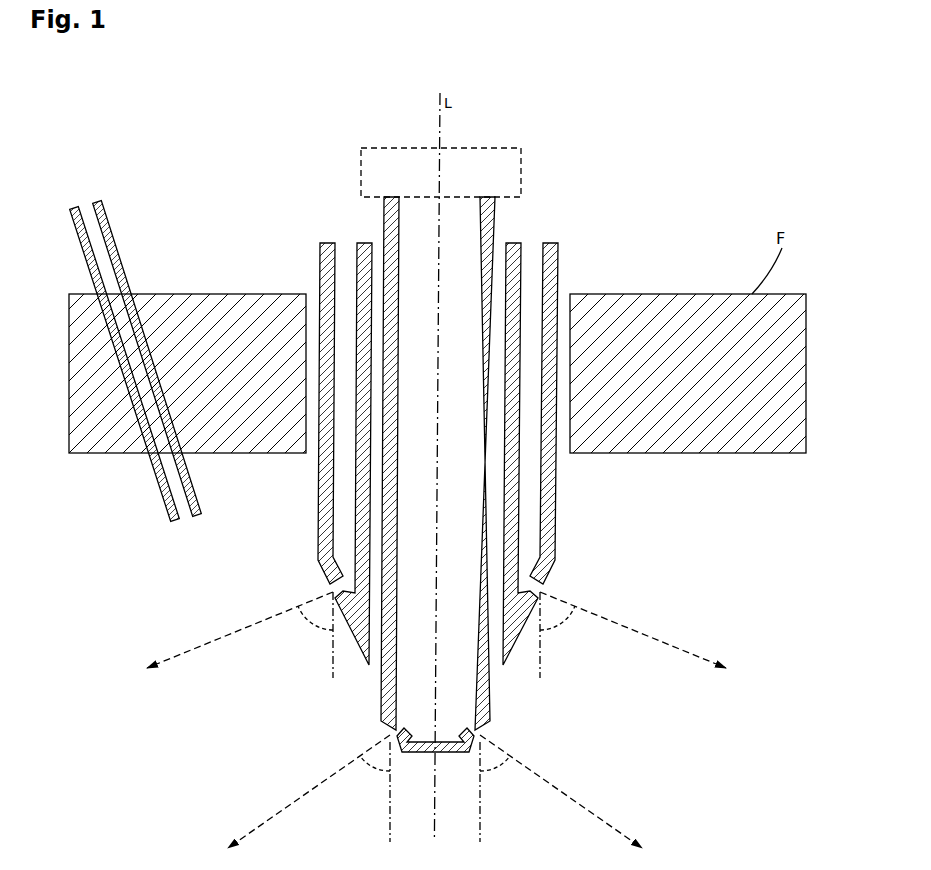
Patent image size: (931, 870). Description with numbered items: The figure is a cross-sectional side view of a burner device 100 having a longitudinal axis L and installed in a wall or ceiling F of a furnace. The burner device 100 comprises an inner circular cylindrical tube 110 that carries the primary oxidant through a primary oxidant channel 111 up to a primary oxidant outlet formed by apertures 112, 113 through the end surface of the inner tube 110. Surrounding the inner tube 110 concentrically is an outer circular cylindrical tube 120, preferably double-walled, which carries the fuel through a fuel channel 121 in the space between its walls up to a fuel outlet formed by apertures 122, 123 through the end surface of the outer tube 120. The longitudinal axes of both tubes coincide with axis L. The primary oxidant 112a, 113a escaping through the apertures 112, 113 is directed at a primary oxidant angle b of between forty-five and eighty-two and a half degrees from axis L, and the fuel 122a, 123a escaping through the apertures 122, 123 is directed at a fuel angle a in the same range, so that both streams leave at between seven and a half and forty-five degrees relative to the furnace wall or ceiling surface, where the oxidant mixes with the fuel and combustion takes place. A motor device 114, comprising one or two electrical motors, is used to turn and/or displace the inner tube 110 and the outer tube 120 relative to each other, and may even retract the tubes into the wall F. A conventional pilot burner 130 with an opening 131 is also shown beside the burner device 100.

The burner device 100 is at (680, 172).
The inner circular cylindrical tube 110 is at (494, 206).
The primary oxidant channel 111 is at (460, 232).
The primary oxidant aperture 112 is at (388, 733).
The primary oxidant 112a is at (303, 791).
The primary oxidant aperture 113 is at (488, 735).
The primary oxidant 113a is at (572, 791).
The motor device 114 is at (492, 147).
The outer circular cylindrical tube 120 is at (486, 430).
The fuel channel 121 is at (347, 248).
The fuel aperture 122 is at (330, 592).
The fuel 122a is at (240, 630).
The fuel aperture 123 is at (550, 592).
The fuel 123a is at (635, 630).
The pilot burner 130 is at (105, 226).
The opening 131 is at (185, 522).